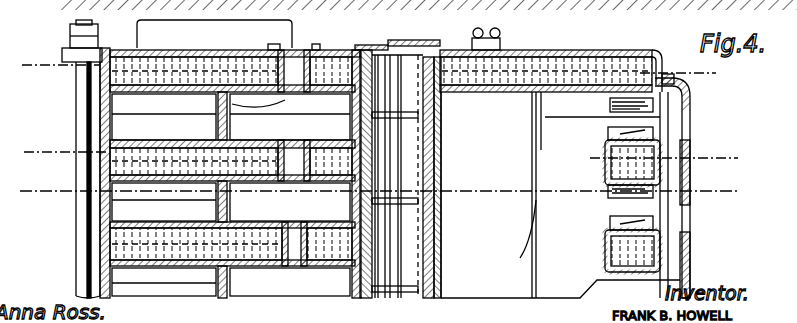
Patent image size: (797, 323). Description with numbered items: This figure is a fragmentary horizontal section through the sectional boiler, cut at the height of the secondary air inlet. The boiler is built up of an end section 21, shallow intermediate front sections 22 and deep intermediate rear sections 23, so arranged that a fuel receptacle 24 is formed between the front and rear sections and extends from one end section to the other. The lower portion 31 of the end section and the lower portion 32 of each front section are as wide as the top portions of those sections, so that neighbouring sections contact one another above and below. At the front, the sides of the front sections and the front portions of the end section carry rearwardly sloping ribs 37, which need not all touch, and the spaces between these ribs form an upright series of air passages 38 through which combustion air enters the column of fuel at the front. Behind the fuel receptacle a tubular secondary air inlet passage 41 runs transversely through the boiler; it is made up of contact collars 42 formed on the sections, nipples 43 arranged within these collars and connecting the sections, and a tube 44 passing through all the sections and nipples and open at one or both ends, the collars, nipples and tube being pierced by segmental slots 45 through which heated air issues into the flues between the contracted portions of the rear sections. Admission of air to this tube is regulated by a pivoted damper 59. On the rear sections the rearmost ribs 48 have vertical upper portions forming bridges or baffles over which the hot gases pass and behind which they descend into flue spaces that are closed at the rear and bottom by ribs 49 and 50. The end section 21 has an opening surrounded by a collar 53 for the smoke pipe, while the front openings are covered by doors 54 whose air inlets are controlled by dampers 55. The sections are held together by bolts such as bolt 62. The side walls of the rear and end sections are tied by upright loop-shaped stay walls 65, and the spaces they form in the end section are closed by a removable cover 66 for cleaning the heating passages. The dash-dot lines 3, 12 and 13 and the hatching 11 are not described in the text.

The axis line 3 is at (385, 193).
The ceiling 11 is at (428, 14).
The axis line 12 is at (379, 156).
The axis line 13 is at (368, 71).
The end section 21 is at (584, 55).
The intermediate front section 22 is at (612, 206).
The intermediate rear section 23 is at (108, 200).
The fuel receptacle 24 is at (560, 257).
The lower portion of end section 31 is at (532, 106).
The lower portion of front section 32 is at (520, 258).
The rib 37 is at (614, 130).
The air passage 38 is at (668, 118).
The secondary air inlet passage 41 is at (397, 169).
The contact collar 42 is at (441, 176).
The nipple 43 is at (440, 120).
The tube 44 is at (410, 300).
The segmental slot 45 is at (408, 210).
The rearmost rib 48 is at (228, 122).
The rib 49 is at (112, 116).
The rib 50 is at (164, 126).
The collar 53 is at (214, 34).
The door 54 is at (690, 100).
The damper 55 is at (690, 178).
The pivoted damper 59 is at (470, 42).
The bolt 62 is at (76, 103).
The stay wall 65 is at (275, 85).
The cover 66 is at (300, 48).